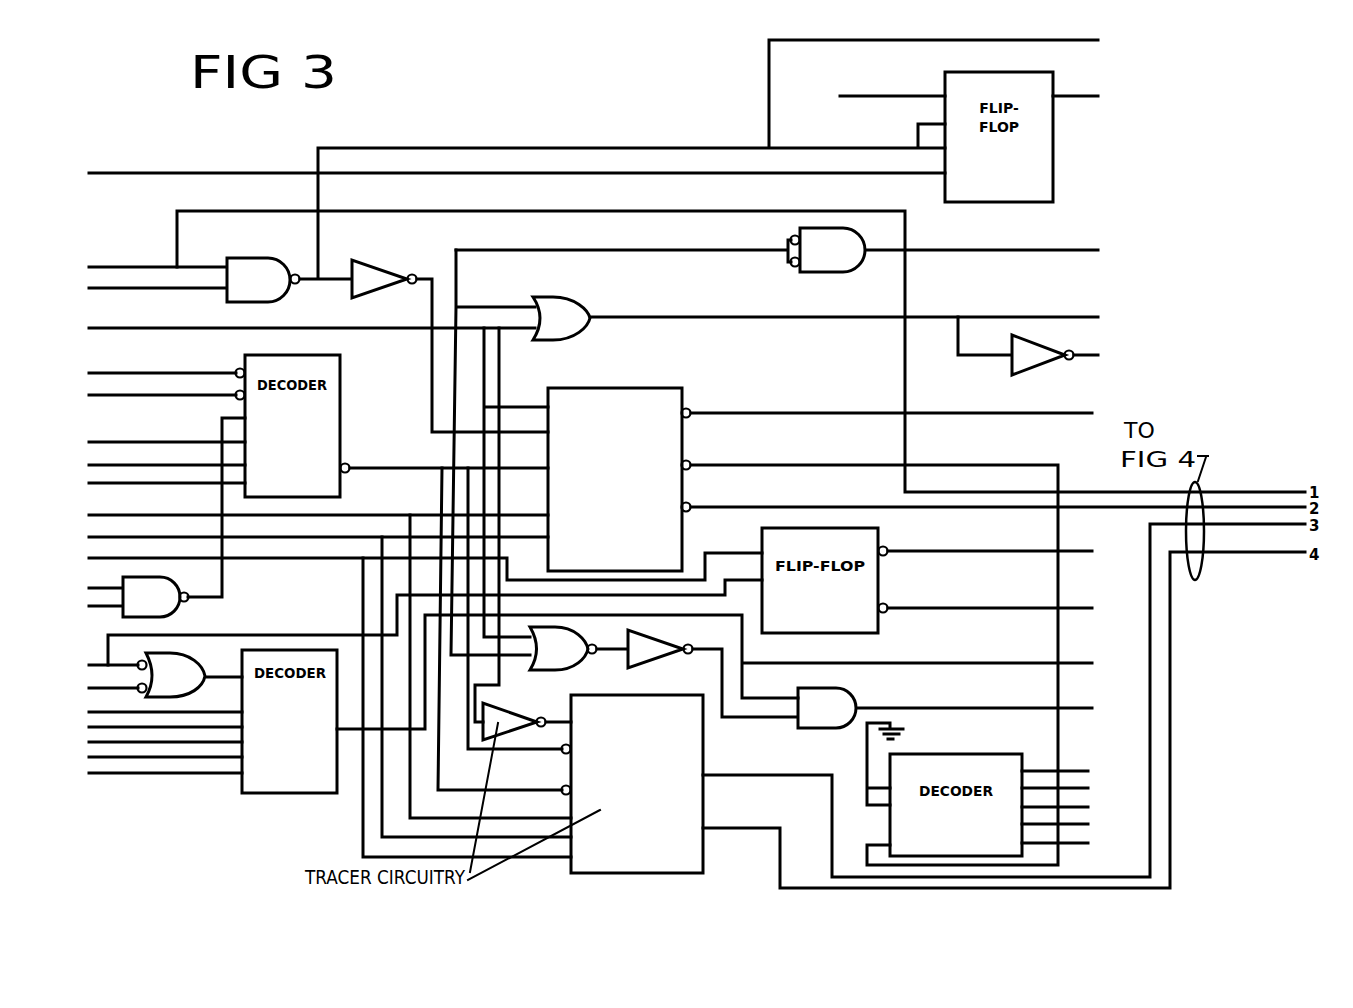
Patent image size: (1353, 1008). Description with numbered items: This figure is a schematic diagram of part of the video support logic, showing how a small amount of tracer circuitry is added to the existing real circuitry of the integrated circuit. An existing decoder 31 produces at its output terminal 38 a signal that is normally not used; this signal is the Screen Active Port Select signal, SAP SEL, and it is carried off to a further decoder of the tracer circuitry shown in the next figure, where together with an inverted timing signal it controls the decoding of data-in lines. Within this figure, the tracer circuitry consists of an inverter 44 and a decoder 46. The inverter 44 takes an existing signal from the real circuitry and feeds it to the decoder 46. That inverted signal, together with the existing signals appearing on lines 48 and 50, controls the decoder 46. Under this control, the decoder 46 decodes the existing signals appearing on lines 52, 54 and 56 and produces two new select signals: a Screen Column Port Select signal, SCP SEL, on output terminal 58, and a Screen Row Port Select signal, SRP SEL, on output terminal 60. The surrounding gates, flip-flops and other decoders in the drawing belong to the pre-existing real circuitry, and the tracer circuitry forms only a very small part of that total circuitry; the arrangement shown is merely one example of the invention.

The decoder 31 is at (630, 511).
The output terminal 38 is at (693, 509).
The inverter 44 is at (494, 712).
The decoder 46 is at (655, 830).
The line 48 is at (463, 725).
The line 50 is at (554, 788).
The line 52 is at (461, 816).
The line 54 is at (378, 786).
The line 56 is at (362, 818).
The output terminal 58 is at (706, 768).
The output terminal 60 is at (706, 827).